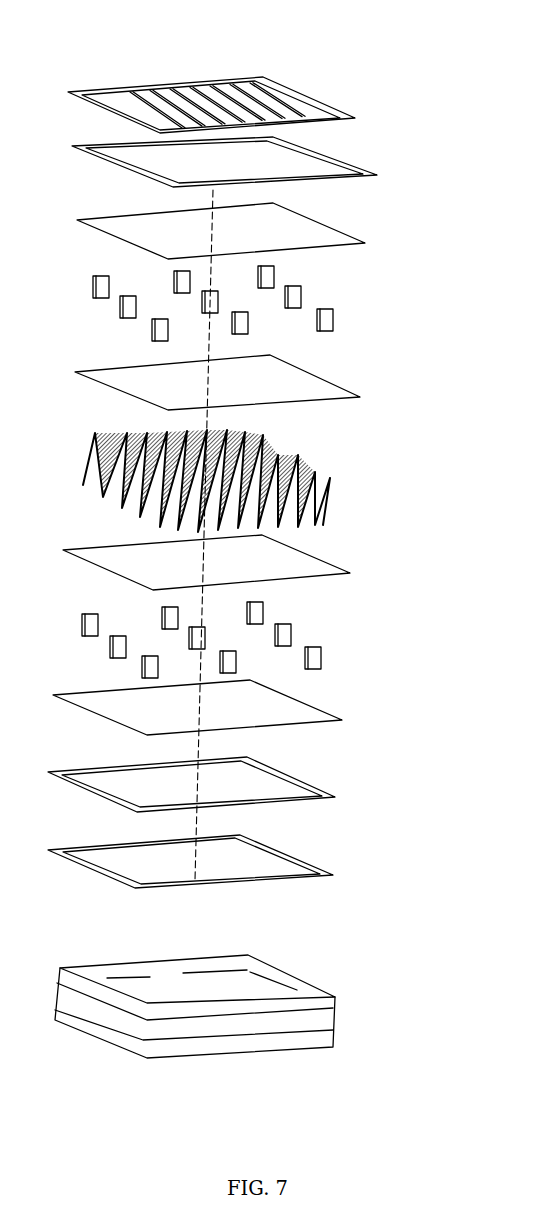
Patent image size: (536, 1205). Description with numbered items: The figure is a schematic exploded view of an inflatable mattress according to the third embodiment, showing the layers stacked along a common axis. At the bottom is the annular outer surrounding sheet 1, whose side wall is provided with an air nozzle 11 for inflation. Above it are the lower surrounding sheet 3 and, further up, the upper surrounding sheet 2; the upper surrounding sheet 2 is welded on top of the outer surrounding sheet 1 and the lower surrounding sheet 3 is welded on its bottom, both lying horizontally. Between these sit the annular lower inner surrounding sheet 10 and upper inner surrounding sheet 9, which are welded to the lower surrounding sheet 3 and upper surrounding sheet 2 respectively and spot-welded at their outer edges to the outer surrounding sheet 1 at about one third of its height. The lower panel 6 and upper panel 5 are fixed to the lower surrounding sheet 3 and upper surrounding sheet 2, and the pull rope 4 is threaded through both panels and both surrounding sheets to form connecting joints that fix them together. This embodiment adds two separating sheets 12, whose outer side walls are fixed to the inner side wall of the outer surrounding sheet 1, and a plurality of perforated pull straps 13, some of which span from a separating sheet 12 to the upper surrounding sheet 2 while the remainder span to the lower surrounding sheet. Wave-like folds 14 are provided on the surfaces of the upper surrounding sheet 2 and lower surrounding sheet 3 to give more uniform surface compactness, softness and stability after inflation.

The outer surrounding sheet 1 is at (231, 1006).
The upper surrounding sheet 2 is at (348, 108).
The lower surrounding sheet 3 is at (317, 865).
The pull rope 4 is at (333, 484).
The upper panel 5 is at (340, 241).
The lower panel 6 is at (330, 709).
The upper inner surrounding sheet 9 is at (350, 169).
The lower inner surrounding sheet 10 is at (315, 783).
The air nozzle 11 is at (322, 1026).
The separating sheet 12 is at (320, 388).
The perforated pull strap 13 is at (322, 327).
The wave-like fold 14 is at (283, 101).